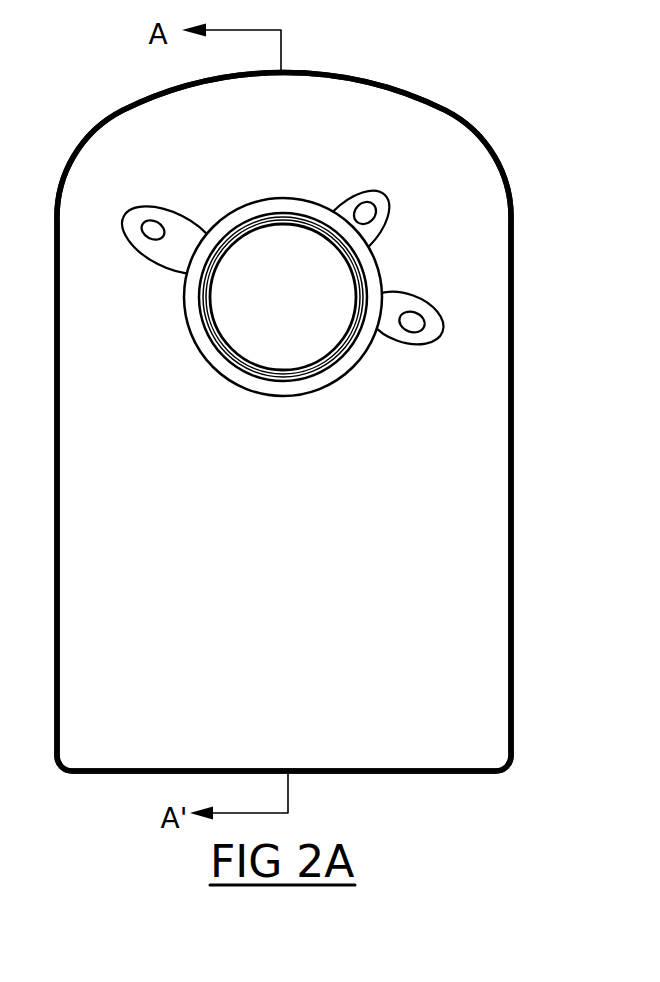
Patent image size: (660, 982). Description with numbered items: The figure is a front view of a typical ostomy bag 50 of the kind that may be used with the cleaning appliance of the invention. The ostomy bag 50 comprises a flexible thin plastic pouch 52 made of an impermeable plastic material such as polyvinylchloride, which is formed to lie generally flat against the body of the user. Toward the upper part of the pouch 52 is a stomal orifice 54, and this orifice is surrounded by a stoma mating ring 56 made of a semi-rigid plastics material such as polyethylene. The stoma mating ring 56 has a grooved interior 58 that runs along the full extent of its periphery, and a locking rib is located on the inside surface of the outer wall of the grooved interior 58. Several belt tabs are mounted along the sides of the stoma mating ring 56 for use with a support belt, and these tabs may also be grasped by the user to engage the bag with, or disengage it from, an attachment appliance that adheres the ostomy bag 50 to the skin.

The ostomy bag 50 is at (498, 138).
The flexible thin plastic pouch 52 is at (470, 623).
The stomal orifice 54 is at (269, 308).
The stoma mating ring 56 is at (319, 400).
The grooved interior 58 is at (243, 370).